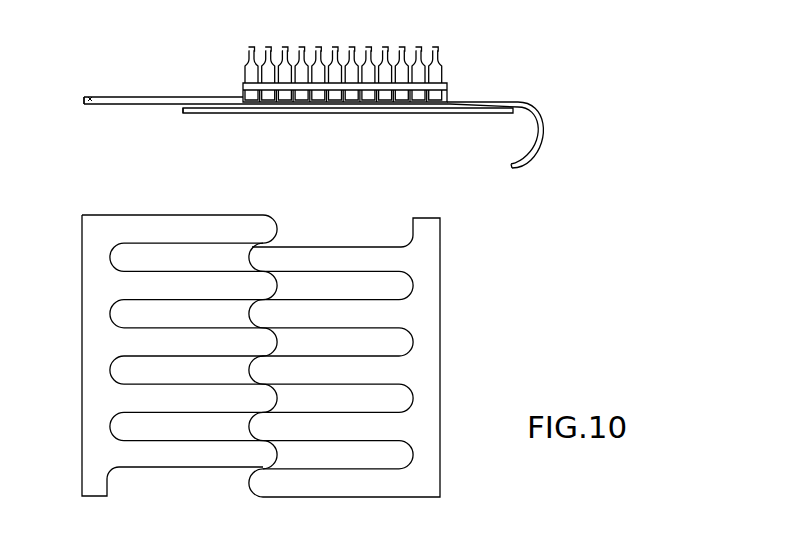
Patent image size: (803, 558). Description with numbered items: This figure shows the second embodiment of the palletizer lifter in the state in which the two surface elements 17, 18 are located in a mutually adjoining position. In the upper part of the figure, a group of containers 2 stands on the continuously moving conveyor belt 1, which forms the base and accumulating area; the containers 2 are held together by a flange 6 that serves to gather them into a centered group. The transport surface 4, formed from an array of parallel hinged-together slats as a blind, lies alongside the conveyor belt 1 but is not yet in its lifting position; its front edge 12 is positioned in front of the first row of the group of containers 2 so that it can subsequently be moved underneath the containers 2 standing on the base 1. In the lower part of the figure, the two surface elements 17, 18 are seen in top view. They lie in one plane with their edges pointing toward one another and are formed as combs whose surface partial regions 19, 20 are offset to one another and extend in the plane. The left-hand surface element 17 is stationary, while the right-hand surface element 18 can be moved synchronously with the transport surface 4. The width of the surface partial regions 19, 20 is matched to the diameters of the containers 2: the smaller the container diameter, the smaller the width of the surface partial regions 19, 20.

The conveyor belt 1 is at (548, 134).
The containers 2 is at (434, 73).
The transport surface 4 is at (524, 103).
The flanges 6 is at (444, 84).
The front edge 12 is at (478, 104).
The surface element 17 is at (97, 106).
The surface element 18 is at (335, 107).
The surface partial regions 19 is at (197, 227).
The surface partial regions 20 is at (330, 258).